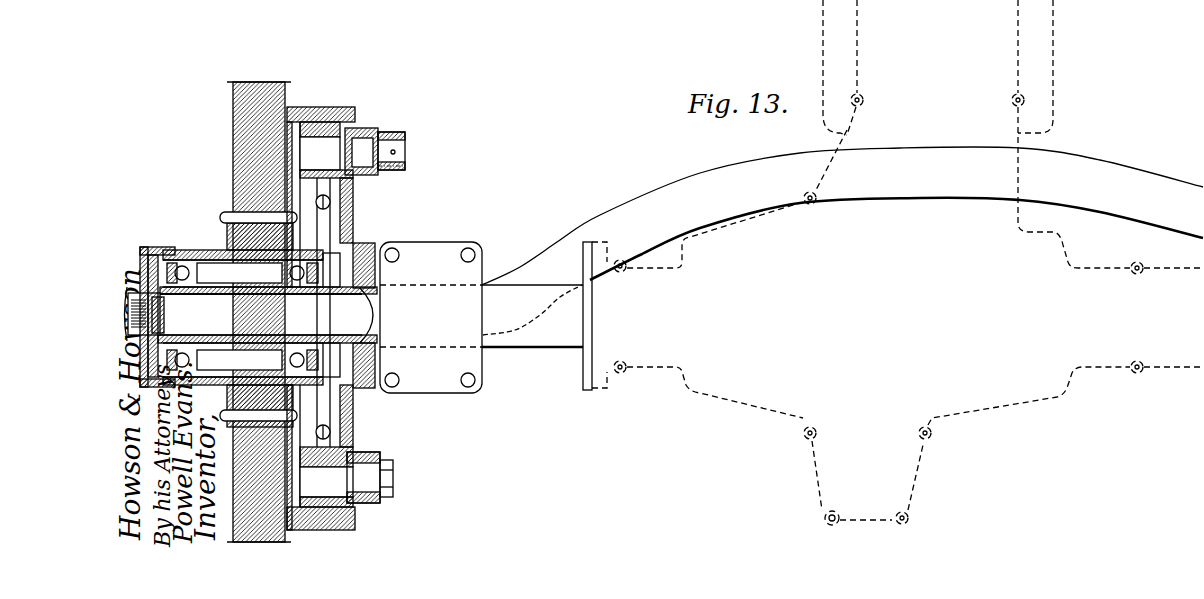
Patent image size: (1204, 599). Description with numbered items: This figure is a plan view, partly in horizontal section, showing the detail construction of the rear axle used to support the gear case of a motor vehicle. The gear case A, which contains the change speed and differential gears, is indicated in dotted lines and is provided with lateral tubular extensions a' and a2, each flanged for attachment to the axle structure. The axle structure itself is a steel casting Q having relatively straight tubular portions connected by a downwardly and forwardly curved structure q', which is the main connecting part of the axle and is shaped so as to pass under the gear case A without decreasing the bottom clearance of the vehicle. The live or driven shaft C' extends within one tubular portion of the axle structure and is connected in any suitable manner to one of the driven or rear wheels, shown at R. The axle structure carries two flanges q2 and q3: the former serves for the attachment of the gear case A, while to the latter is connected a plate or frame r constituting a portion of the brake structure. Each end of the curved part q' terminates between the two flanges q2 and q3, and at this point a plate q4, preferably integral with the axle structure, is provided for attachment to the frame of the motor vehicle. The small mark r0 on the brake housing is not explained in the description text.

The rear wheel R is at (240, 148).
The plate or frame r is at (357, 433).
The bearing housing upper part r0 is at (353, 214).
The live or driven shaft C' is at (251, 315).
The downwardly and forwardly curved structure q' is at (811, 256).
The flange q2 is at (586, 262).
The flange q3 is at (360, 390).
The plate q4 is at (453, 386).
The steel casting Q is at (713, 173).
The gear case A is at (878, 262).
The lateral tubular extension a2 is at (611, 315).
The lateral tubular extension a' is at (1108, 186).